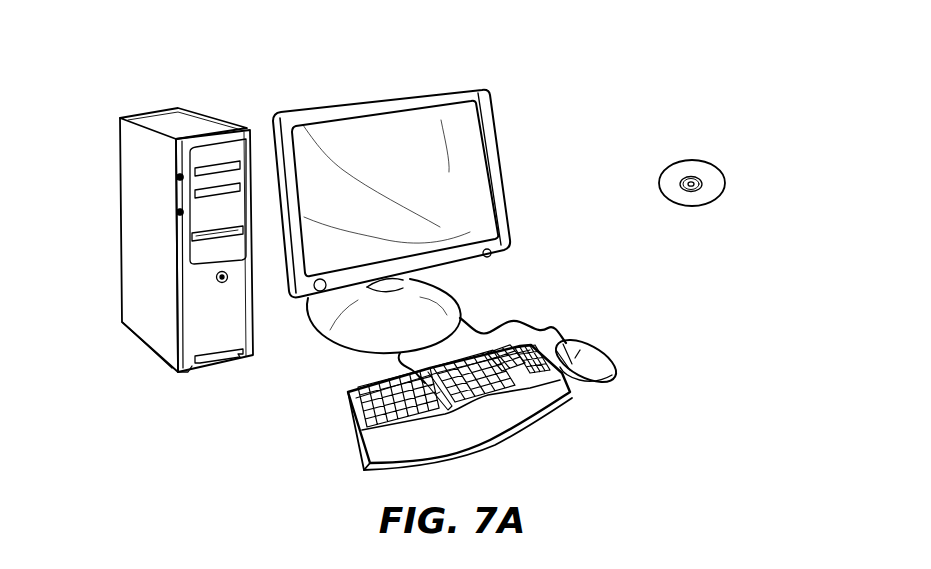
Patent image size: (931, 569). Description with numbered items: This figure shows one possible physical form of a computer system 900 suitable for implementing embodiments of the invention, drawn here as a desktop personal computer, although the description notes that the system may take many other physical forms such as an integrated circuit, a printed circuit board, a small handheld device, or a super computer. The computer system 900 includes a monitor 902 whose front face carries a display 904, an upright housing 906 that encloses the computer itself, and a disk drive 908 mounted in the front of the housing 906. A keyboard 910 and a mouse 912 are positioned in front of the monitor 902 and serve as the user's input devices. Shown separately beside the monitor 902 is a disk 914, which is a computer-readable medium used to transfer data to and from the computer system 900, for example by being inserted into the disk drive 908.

The computer system 900 is at (616, 74).
The monitor 902 is at (502, 192).
The display 904 is at (457, 130).
The housing 906 is at (172, 120).
The disk drive 908 is at (232, 236).
The keyboard 910 is at (358, 438).
The mouse 912 is at (610, 357).
The disk 914 is at (706, 162).